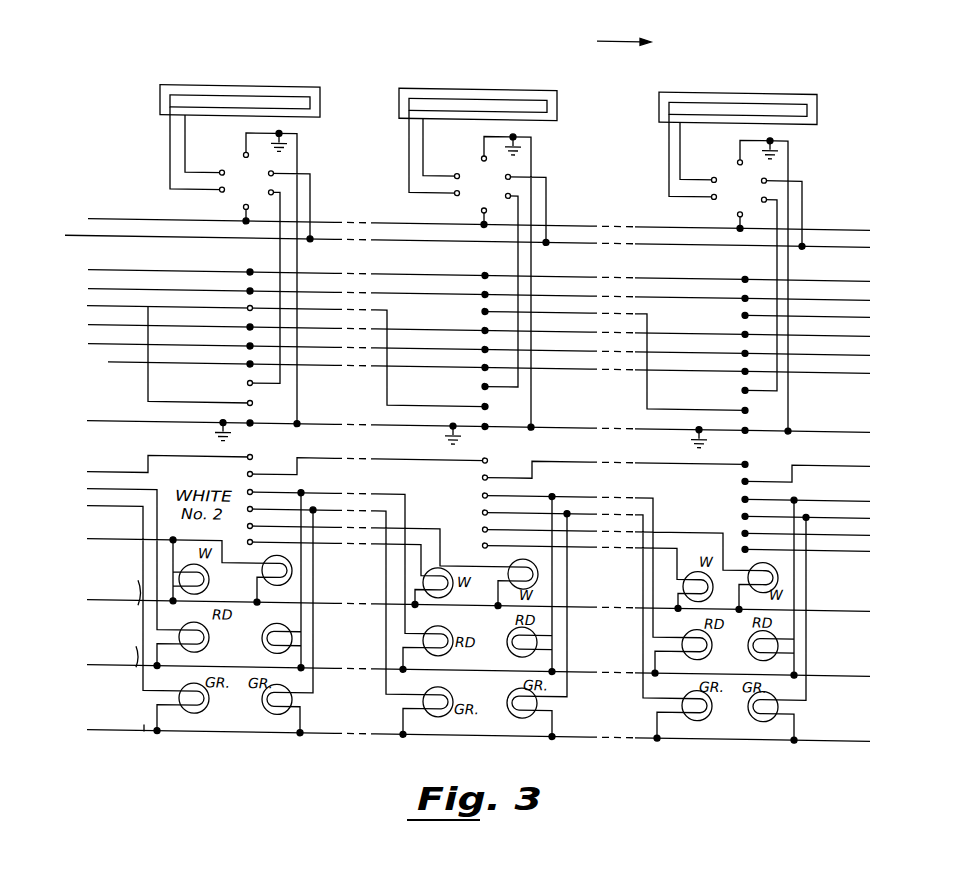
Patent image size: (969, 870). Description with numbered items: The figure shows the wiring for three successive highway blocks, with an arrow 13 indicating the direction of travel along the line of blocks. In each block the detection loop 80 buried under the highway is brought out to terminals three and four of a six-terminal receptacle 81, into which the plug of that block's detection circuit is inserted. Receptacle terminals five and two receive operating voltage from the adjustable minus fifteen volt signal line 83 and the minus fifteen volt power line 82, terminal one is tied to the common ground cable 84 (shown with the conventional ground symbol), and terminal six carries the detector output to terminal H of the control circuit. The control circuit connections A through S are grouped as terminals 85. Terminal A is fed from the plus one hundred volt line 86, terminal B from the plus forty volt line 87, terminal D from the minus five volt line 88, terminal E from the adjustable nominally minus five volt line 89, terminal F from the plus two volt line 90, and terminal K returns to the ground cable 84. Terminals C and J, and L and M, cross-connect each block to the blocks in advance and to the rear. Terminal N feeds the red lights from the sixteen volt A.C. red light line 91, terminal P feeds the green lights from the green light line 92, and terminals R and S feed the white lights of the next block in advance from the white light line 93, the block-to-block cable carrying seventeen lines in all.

The direction of travel arrow 13 is at (615, 31).
The detection loop 80 is at (309, 87).
The receptacle 81 is at (252, 187).
The power line 82 is at (233, 241).
The signal line 83 is at (226, 224).
The ground cable 84 is at (108, 428).
The terminals 85 is at (262, 260).
The plus 100 volt supply line 86 is at (104, 276).
The plus 40 volt supply line 87 is at (103, 294).
The minus 5 volt supply line 88 is at (100, 330).
The adjustable minus 5 volt supply line 89 is at (101, 349).
The plus 2 volt supply line 90 is at (108, 368).
The red light line 91 is at (137, 671).
The green light line 92 is at (187, 734).
The white light line 93 is at (140, 607).